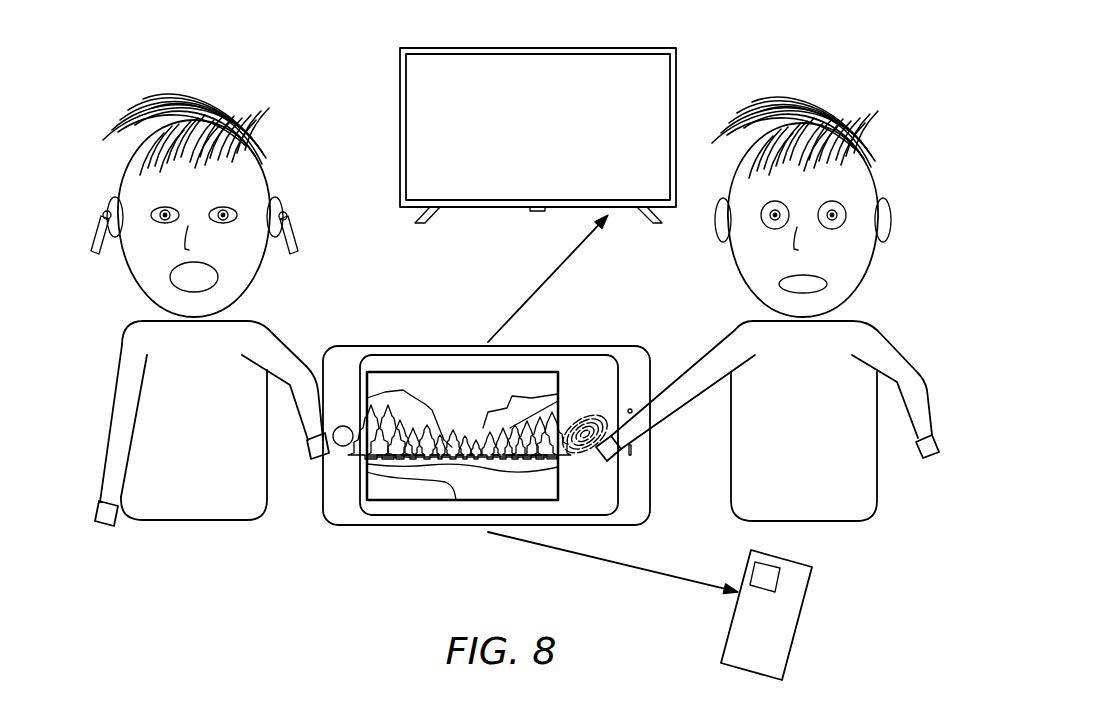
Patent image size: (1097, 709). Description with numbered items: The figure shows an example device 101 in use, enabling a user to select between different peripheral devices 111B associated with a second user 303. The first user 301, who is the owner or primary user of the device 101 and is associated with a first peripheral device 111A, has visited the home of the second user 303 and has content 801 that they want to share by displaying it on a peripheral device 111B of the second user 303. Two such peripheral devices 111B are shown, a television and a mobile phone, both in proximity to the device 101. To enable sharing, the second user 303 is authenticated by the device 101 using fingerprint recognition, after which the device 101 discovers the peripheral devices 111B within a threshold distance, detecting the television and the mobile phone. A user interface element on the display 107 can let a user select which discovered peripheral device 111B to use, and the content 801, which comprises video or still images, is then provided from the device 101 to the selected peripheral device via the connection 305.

The device 101 is at (486, 431).
The display 107 is at (388, 510).
The first peripheral device 111A is at (295, 228).
The second peripheral devices 111B is at (400, 62).
The first user 301 is at (122, 173).
The second user 303 is at (877, 173).
The connection 305 is at (538, 288).
The content 801 is at (473, 492).